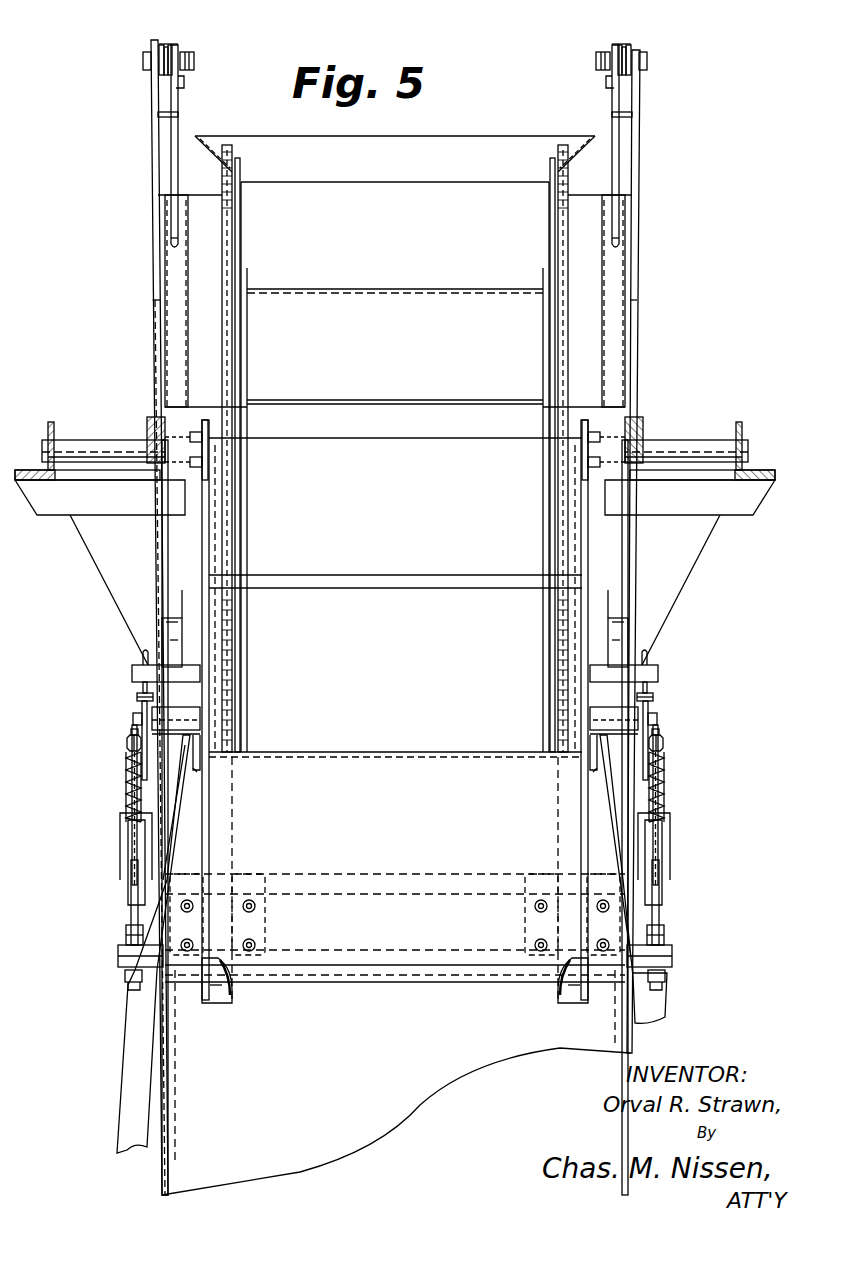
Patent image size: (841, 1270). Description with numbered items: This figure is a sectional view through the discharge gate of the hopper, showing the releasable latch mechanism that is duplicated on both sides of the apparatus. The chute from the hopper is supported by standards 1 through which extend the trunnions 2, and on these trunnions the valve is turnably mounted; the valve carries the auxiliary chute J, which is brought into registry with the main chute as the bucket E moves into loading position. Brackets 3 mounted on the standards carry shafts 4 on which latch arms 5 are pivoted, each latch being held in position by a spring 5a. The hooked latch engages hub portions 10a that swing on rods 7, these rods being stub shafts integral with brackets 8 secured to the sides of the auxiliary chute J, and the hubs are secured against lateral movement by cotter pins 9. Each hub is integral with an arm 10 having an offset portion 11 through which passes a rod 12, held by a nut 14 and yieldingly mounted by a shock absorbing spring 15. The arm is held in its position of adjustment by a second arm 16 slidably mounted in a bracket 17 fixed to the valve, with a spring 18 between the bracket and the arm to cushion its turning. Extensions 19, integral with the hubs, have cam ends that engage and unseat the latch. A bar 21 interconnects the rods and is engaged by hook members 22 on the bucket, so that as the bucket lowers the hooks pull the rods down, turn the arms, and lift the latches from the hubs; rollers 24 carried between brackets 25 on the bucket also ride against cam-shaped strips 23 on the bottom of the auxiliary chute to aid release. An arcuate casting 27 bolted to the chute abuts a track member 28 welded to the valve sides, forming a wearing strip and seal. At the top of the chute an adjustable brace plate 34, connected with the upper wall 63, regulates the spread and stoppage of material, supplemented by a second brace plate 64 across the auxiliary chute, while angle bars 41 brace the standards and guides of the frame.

The standard 1 is at (128, 1110).
The trunnion 2 is at (103, 440).
The bracket 3 is at (151, 172).
The shaft 4 is at (143, 58).
The latch arm 5 is at (180, 135).
The spring 5a is at (166, 47).
The rod 7 is at (142, 714).
The bracket 8 is at (197, 770).
The cotter pin 9 is at (133, 719).
The arm 10 is at (132, 798).
The hub portion 10a is at (190, 719).
The offset portion 11 is at (120, 843).
The rod 12 is at (130, 875).
The nut 14 is at (127, 743).
The shock absorbing spring 15 is at (126, 780).
The second arm 16 is at (143, 656).
The bracket 17 is at (132, 673).
The spring 18 is at (140, 697).
The extension 19 is at (170, 640).
The bar 21 is at (118, 956).
The hook member 22 is at (178, 1080).
The cam-shaped strip 23 is at (222, 996).
The roller 24 is at (232, 868).
The bracket 25 is at (187, 872).
The casting 27 is at (228, 258).
The track member 28 is at (218, 663).
The brace plate 34 is at (510, 356).
The angle bar 41 is at (51, 420).
The upper wall 63 is at (472, 215).
The second brace plate 64 is at (395, 710).
The bucket E is at (440, 1095).
The auxiliary chute J is at (391, 986).